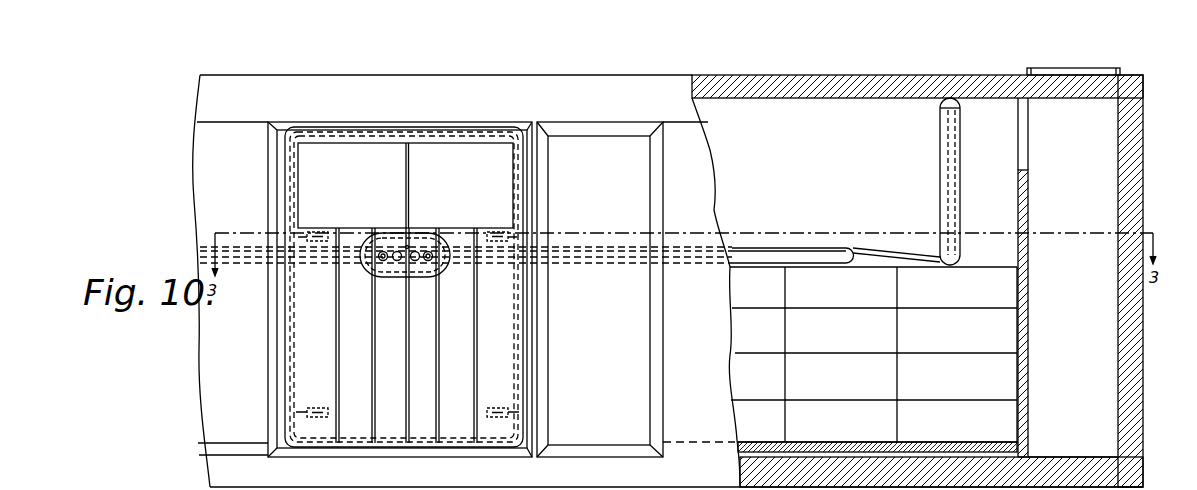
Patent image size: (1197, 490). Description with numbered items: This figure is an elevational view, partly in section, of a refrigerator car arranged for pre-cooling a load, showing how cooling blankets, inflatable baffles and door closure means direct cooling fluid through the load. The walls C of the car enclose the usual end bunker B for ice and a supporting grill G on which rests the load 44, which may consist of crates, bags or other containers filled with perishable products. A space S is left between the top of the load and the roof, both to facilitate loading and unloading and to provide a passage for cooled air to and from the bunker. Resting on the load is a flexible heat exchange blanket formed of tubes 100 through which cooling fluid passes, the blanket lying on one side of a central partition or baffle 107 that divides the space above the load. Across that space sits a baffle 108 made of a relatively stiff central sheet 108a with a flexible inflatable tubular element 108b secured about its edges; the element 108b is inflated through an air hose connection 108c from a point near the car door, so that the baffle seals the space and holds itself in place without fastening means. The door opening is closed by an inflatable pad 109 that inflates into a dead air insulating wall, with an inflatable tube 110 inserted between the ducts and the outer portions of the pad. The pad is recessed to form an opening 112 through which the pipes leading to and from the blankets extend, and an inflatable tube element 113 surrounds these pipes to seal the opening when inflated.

The load 44 is at (998, 325).
The tubes 100 is at (824, 267).
The central partition or baffle 107 is at (409, 183).
The baffle 108 is at (925, 140).
The central sheet 108a is at (960, 127).
The inflatable tubular element 108b is at (955, 172).
The air hose connection 108c is at (878, 247).
The inflatable pad 109 is at (378, 230).
The inflatable tube 110 is at (520, 447).
The opening 112 is at (440, 270).
The inflatable tube element 113 is at (400, 272).
The space S is at (840, 173).
The end bunker B is at (1076, 194).
The supporting grill G is at (978, 420).
The walls C is at (1143, 188).